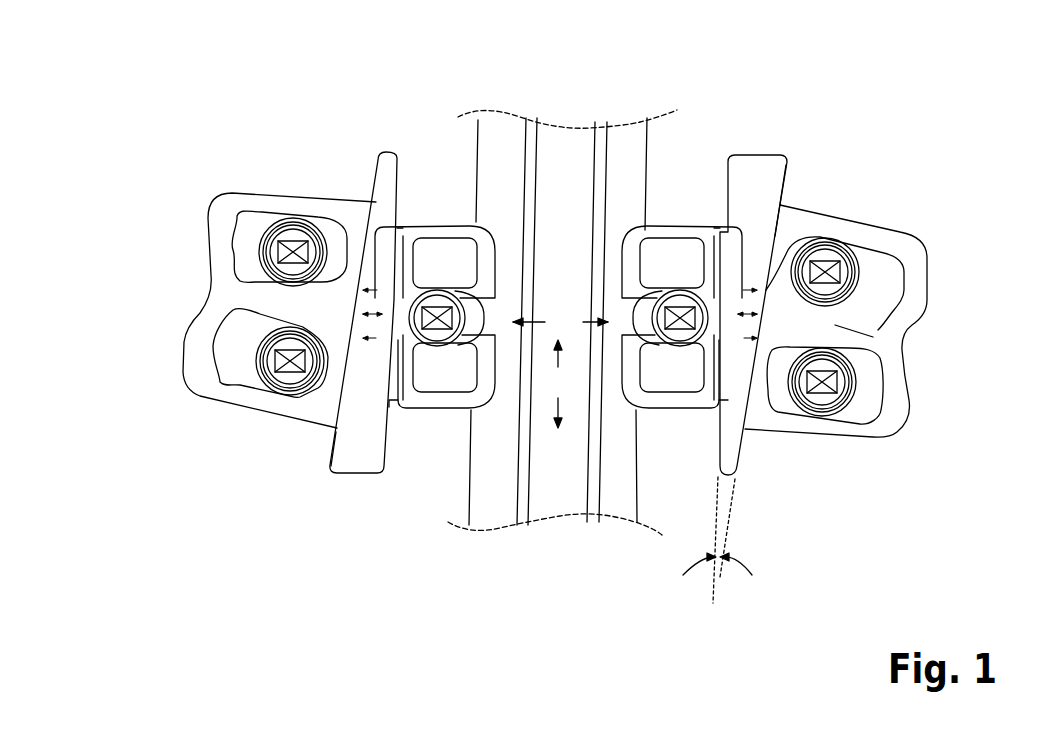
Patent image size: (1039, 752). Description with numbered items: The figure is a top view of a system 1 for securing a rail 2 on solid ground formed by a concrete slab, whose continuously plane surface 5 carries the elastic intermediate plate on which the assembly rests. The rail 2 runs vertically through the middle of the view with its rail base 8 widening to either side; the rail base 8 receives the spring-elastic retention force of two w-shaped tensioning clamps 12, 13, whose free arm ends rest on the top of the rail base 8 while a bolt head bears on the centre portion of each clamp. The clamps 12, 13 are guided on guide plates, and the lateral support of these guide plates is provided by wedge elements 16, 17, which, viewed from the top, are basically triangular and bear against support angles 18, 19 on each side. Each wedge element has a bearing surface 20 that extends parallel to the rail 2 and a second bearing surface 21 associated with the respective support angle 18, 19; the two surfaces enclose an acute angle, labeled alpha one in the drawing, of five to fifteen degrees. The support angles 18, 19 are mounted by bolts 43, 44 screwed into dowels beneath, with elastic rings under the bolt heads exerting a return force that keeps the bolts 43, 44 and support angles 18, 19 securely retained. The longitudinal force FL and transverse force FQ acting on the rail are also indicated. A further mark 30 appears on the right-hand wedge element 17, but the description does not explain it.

The system for securing a rail 1 is at (288, 136).
The rail 2 is at (557, 166).
The surface of the solid ground 5 is at (351, 557).
The rail base 8 is at (510, 137).
The tensioning clamp 12 is at (442, 228).
The tensioning clamp 13 is at (672, 403).
The wedge element 16 is at (385, 158).
The wedge element 17 is at (757, 170).
The support angle 18 is at (282, 305).
The support angle 19 is at (900, 340).
The bearing surface 20 is at (398, 405).
The bearing surface 21 is at (330, 454).
The contact surface of guide plate 30 is at (782, 207).
The bolt 43 is at (280, 243).
The bolt 44 is at (276, 360).